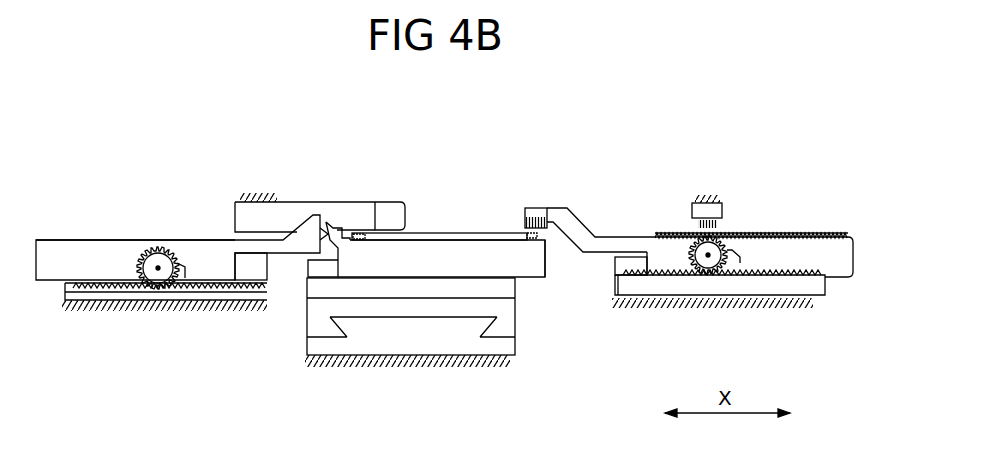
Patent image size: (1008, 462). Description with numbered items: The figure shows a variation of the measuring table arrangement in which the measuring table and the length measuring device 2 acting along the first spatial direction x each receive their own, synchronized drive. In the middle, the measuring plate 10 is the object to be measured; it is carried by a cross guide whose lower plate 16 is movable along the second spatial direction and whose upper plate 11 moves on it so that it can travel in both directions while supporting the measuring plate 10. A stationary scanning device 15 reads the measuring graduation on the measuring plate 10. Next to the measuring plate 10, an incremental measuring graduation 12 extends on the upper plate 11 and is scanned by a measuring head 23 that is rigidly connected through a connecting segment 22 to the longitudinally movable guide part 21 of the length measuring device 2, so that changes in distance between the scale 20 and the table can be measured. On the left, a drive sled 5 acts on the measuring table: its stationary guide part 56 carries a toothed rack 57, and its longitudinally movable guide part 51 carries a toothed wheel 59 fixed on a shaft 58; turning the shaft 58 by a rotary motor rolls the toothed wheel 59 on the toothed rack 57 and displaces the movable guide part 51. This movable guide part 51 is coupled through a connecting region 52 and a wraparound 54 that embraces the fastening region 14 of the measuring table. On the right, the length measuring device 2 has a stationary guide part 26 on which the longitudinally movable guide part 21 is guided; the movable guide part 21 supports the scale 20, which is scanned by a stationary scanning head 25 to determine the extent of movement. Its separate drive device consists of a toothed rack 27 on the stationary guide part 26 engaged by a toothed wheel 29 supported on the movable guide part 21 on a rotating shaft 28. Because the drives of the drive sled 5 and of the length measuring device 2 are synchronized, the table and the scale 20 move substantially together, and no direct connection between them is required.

The length measuring device 2 is at (788, 222).
The drive sled 5 is at (86, 230).
The measuring plate 10 is at (442, 233).
The upper plate 11 is at (518, 260).
The incremental measuring graduation 12 is at (545, 243).
The fastening region 14 is at (318, 220).
The scanning device 15 is at (387, 210).
The lower plate 16 is at (318, 328).
The scale 20 is at (830, 231).
The longitudinally movable guide part 21 is at (838, 260).
The connecting segment 22 is at (562, 213).
The measuring head 23 is at (528, 220).
The scanning head 25 is at (707, 228).
The stationary guide part 26 is at (625, 277).
The toothed rack 27 is at (793, 267).
The rotating shaft 28 is at (708, 258).
The toothed wheel 29 is at (740, 260).
The longitudinally movable guide part 51 is at (194, 253).
The connecting region 52 is at (252, 242).
The wraparound 54 is at (303, 243).
The stationary guide part 56 is at (250, 272).
The toothed rack 57 is at (77, 297).
The shaft 58 is at (159, 277).
The toothed wheel 59 is at (183, 270).